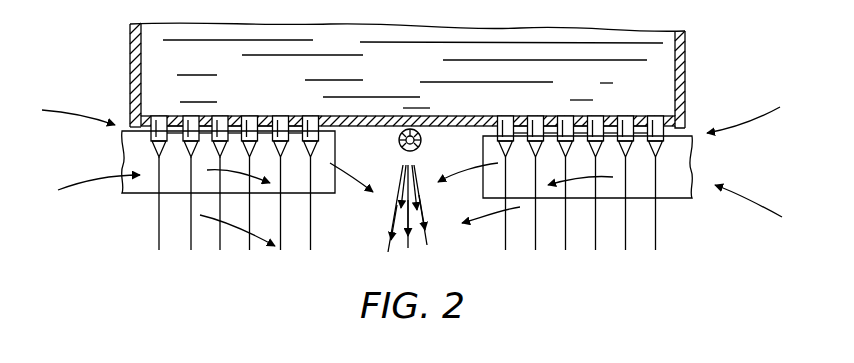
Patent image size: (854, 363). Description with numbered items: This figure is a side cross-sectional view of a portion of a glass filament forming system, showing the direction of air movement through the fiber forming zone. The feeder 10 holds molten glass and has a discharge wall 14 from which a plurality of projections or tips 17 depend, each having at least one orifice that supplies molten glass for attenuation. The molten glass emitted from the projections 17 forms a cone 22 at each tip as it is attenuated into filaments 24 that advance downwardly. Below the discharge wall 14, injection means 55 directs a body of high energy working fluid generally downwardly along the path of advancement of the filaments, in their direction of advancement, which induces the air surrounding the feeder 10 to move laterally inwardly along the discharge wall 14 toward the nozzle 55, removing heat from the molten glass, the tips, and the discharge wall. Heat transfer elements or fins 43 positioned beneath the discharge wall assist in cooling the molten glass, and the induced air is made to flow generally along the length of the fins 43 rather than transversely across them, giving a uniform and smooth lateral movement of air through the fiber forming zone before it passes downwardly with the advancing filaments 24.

The feeder 10 is at (690, 92).
The discharge wall 14 is at (439, 117).
The projections or tips 17 is at (240, 118).
The cone 22 is at (157, 157).
The filaments 24 is at (190, 240).
The heat transfer elements or fins 43 is at (121, 157).
The injection means (nozzle) 55 is at (401, 154).